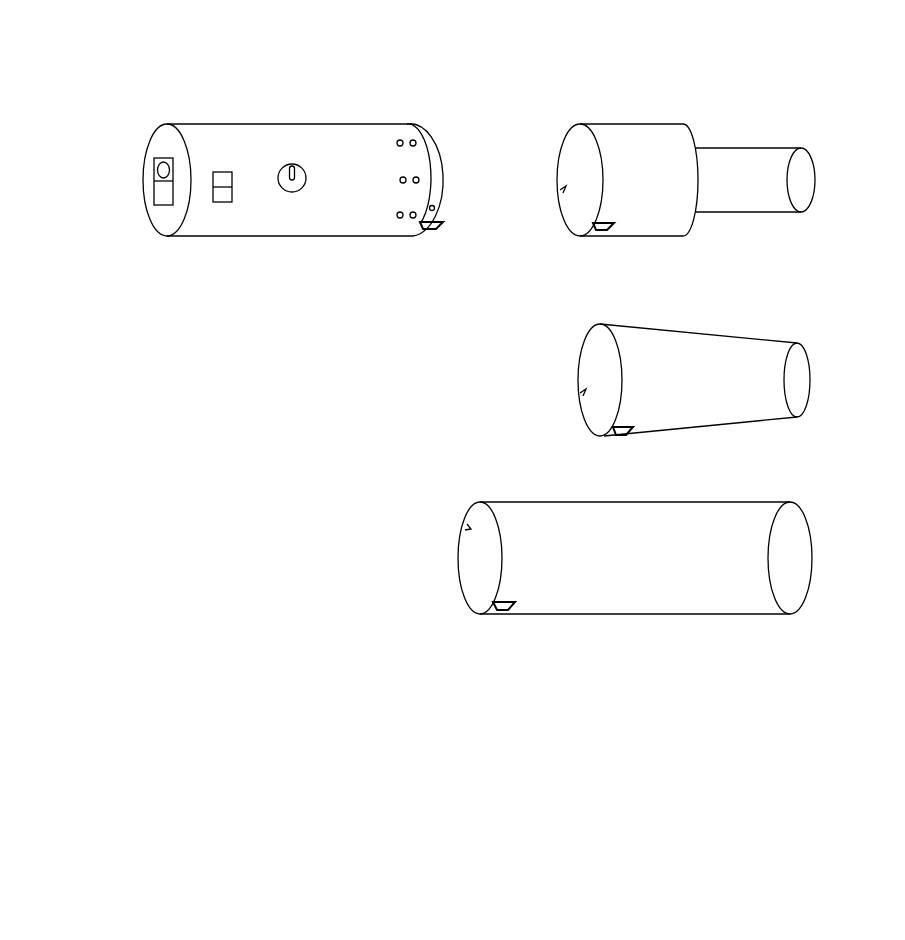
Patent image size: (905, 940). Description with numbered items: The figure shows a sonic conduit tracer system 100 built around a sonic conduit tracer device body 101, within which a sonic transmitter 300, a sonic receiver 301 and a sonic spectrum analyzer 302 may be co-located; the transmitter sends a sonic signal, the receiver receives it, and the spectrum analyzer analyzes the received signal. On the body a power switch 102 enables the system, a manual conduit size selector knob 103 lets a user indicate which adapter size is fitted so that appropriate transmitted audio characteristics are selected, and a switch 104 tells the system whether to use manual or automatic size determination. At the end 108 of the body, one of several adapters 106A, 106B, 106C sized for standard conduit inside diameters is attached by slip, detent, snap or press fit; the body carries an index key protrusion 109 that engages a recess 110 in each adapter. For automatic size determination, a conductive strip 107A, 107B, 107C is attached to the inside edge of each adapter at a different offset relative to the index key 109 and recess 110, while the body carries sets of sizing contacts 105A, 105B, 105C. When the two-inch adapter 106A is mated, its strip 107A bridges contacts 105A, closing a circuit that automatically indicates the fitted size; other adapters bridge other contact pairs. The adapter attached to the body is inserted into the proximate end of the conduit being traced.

The sonic conduit tracer system 100 is at (297, 127).
The sonic conduit tracer device body 101 is at (360, 137).
The power switch 102 is at (158, 181).
The manual conduit size selector knob 103 is at (303, 193).
The switch 104 is at (206, 197).
The sizing contacts 105A is at (397, 135).
The sizing contacts 105B is at (418, 158).
The sizing contacts 105C is at (402, 220).
The adapter 106A is at (672, 140).
The adapter 106B is at (757, 344).
The adapter 106C is at (730, 503).
The conductive strip 107A is at (565, 187).
The conductive strip 107B is at (585, 390).
The conductive strip 107C is at (470, 528).
The end 108 is at (438, 180).
The index key protrusion 109 is at (428, 235).
The recess 110 is at (600, 231).
The sonic transmitter 300 is at (319, 178).
The sonic receiver 301 is at (246, 137).
The sonic spectrum analyzer 302 is at (190, 137).